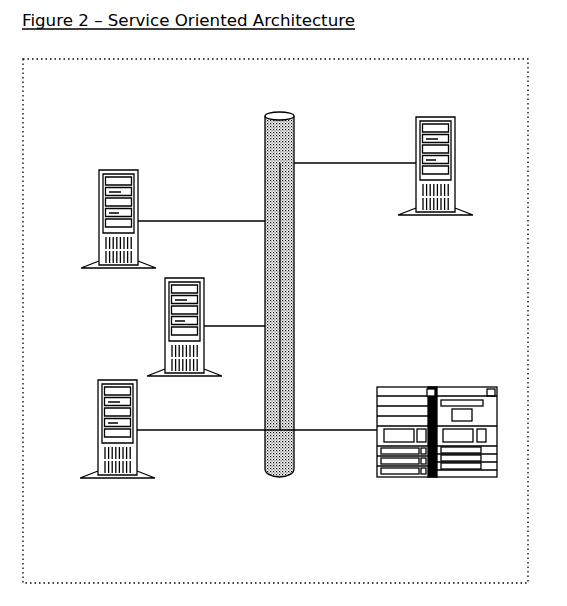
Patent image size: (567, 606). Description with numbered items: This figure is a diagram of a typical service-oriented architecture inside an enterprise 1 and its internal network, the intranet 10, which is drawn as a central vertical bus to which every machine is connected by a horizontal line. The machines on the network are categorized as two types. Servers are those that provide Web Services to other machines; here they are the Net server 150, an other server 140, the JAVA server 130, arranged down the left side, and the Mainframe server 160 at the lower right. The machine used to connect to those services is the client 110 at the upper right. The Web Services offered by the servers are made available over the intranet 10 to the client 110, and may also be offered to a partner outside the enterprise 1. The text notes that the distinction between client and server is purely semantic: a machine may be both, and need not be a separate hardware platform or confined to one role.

The enterprise 1 is at (275, 321).
The intranet 10 is at (276, 294).
The client 110 is at (453, 171).
The JAVA server 130 is at (135, 437).
The server 140 is at (202, 333).
The Net server 150 is at (135, 227).
The Mainframe server 160 is at (437, 414).